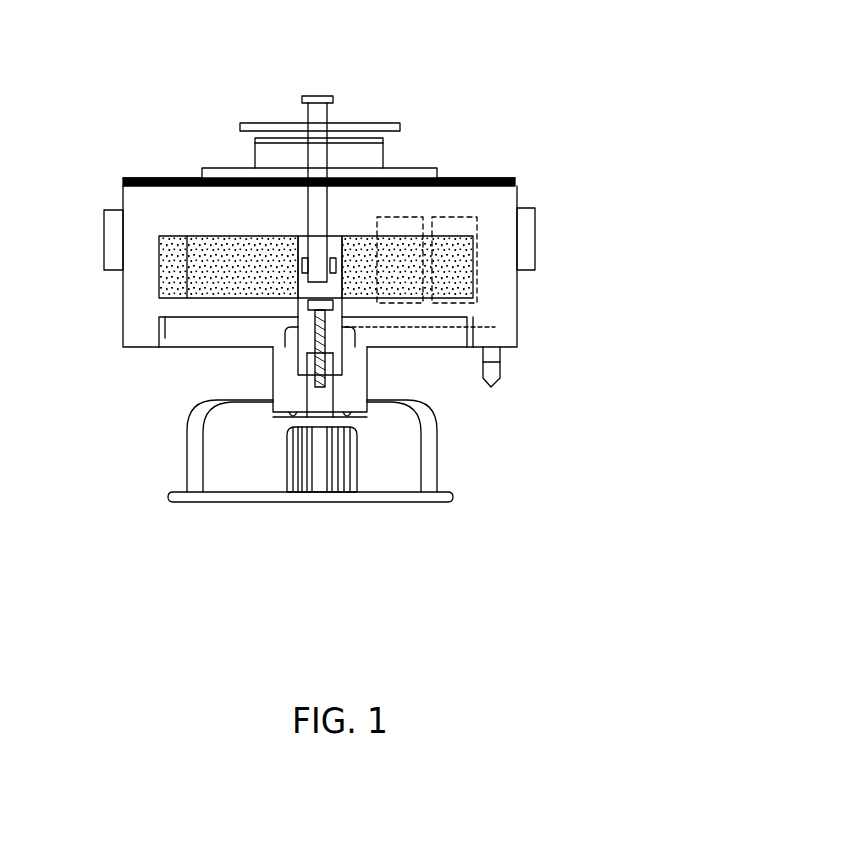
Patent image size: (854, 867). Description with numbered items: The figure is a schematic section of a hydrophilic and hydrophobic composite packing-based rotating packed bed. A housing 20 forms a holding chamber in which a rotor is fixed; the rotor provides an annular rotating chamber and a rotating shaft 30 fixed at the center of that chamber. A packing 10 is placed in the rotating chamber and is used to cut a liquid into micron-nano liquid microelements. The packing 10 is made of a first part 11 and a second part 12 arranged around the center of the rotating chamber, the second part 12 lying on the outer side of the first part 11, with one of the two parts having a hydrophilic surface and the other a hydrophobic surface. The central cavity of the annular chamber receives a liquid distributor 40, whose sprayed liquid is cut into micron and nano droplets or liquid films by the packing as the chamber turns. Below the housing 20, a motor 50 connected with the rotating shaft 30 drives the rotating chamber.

The packing 10 is at (424, 189).
The first part 11 is at (406, 218).
The second part 12 is at (453, 253).
The housing 20 is at (517, 297).
The rotating shaft 30 is at (323, 333).
The liquid distributor 40 is at (320, 246).
The motor 50 is at (317, 463).